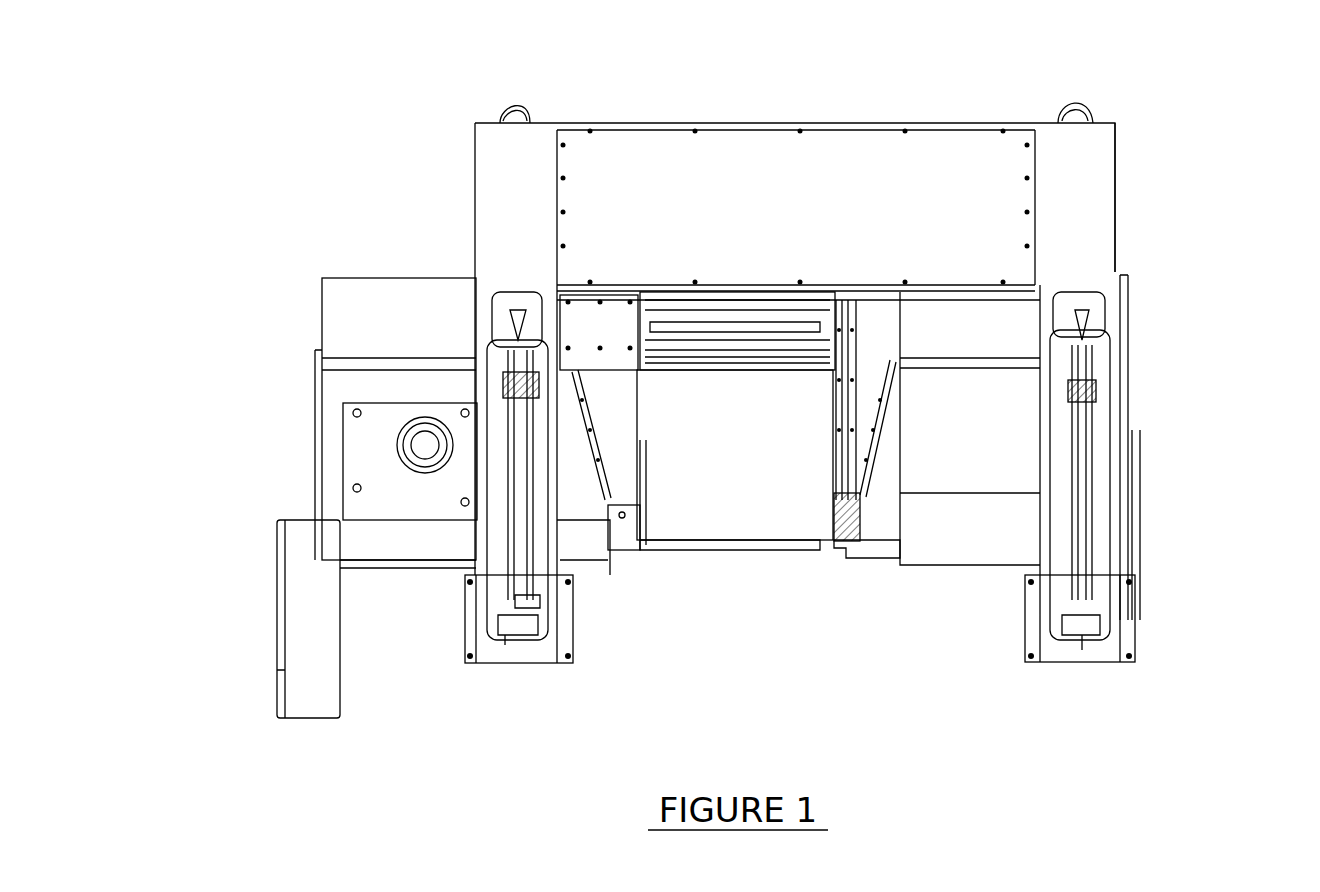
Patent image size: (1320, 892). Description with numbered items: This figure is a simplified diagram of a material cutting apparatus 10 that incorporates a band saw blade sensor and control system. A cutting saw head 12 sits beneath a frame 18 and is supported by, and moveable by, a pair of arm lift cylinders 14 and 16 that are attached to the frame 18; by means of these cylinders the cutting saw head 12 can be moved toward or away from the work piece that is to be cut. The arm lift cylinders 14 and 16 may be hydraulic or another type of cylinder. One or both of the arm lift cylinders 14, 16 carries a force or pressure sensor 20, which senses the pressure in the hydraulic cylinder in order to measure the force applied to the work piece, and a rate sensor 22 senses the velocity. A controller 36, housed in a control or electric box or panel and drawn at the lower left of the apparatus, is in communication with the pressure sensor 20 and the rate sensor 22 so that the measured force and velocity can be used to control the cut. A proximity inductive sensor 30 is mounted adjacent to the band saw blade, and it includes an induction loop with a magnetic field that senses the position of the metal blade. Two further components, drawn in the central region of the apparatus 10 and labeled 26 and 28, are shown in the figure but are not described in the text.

The material cutting apparatus 10 is at (483, 122).
The cutting saw head 12 is at (385, 278).
The arm lift cylinder 14 is at (1090, 517).
The arm lift cylinder 16 is at (507, 560).
The frame 18 is at (1097, 185).
The force or pressure sensor 20 is at (535, 593).
The rate sensor 22 is at (533, 578).
The hatched block 26 is at (835, 507).
The central housing 28 is at (637, 412).
The proximity inductive sensor 30 is at (852, 556).
The controller 36 is at (277, 643).